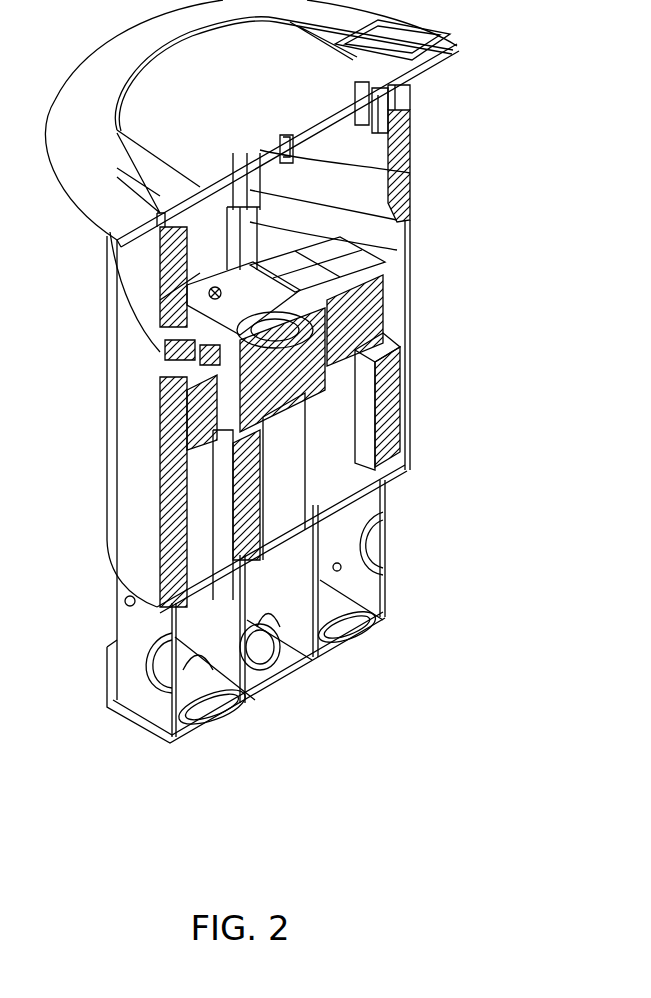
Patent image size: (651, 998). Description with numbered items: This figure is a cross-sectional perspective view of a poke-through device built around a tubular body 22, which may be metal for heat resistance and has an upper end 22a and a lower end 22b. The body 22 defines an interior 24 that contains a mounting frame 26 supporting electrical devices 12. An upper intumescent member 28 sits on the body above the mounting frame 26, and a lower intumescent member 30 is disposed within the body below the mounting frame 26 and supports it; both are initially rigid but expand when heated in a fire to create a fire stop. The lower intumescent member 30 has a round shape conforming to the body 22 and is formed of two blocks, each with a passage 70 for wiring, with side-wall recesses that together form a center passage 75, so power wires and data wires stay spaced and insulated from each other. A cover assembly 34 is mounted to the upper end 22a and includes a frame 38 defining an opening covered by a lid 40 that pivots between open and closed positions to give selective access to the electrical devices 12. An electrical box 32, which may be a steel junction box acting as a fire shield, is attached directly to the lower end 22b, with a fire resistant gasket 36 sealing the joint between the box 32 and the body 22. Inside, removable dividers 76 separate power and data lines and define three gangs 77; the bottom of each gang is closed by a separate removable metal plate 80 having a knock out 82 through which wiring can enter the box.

The electrical devices 12 is at (170, 347).
The tubular body 22 is at (127, 460).
The upper end 22a is at (130, 342).
The lower end 22b is at (127, 548).
The interior 24 is at (203, 307).
The mounting frame 26 is at (325, 235).
The upper intumescent member 28 is at (400, 181).
The lower intumescent member 30 is at (385, 415).
The electrical box 32 is at (260, 697).
The cover assembly 34 is at (463, 43).
The fire resistant gasket 36 is at (403, 470).
The frame 38 is at (66, 134).
The lid 40 is at (217, 99).
The passage 70 is at (203, 505).
The center passage 75 is at (343, 493).
The dividers 76 is at (287, 588).
The gangs 77 is at (200, 633).
The removable metal plates 80 is at (310, 663).
The knock out 82 is at (280, 683).